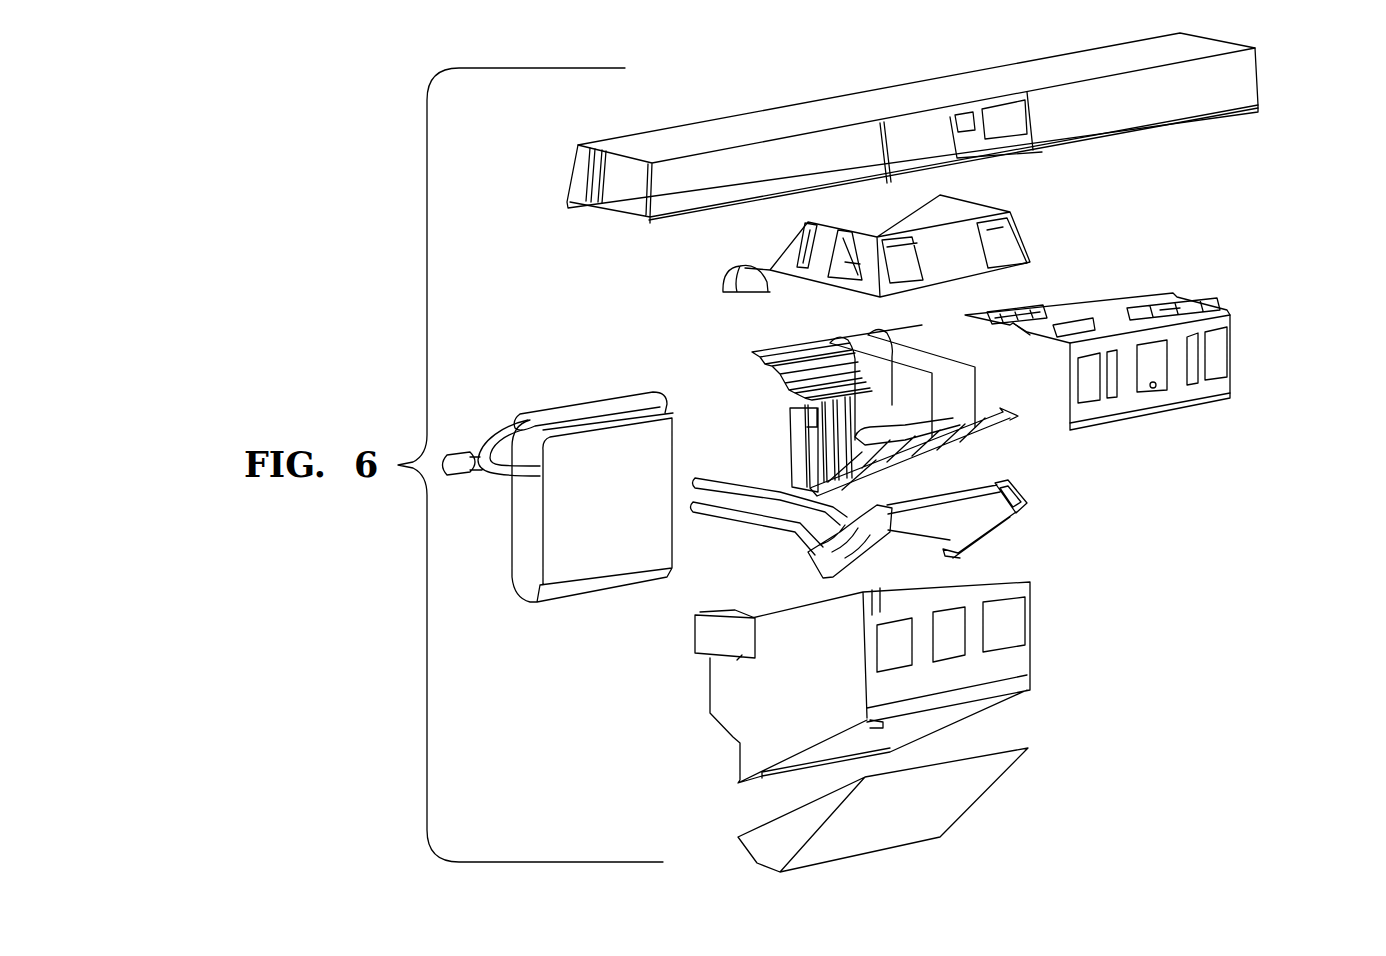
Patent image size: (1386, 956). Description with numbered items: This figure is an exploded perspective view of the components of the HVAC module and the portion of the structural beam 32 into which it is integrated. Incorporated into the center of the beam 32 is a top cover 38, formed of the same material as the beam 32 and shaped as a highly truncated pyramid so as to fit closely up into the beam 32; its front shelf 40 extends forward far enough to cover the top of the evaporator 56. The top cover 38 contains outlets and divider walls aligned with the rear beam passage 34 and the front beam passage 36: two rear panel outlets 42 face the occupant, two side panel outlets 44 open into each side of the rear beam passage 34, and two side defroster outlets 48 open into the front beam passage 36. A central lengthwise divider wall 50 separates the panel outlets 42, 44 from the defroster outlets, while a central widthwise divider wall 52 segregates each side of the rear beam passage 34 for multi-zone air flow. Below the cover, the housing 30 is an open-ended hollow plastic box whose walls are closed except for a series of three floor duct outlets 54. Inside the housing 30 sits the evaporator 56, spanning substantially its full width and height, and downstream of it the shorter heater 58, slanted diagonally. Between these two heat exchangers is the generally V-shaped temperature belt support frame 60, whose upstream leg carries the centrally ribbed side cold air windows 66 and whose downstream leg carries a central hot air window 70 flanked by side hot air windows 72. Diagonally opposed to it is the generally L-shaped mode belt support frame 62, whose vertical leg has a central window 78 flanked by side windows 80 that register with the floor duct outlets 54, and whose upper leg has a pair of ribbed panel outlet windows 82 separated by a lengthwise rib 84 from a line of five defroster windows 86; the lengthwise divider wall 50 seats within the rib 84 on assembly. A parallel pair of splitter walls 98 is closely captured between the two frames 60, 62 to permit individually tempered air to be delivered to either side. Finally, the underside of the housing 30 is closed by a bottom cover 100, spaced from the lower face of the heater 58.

The housing 30 is at (877, 682).
The beam 32 is at (748, 117).
The rear beam passage 34 is at (638, 190).
The front beam passage 36 is at (583, 173).
The top cover 38 is at (872, 219).
The front shelf 40 is at (733, 275).
The rear panel outlets 42 is at (917, 255).
The side panel outlets 44 is at (850, 240).
The side defroster outlets 48 is at (808, 250).
The lengthwise divider wall 50 is at (863, 255).
The widthwise divider wall 52 is at (923, 260).
The floor duct outlets 54 is at (1000, 607).
The evaporator 56 is at (627, 398).
The heater 58 is at (1027, 493).
The temperature belt support frame 60 is at (878, 395).
The mode belt support frame 62 is at (1153, 354).
The side cold air windows 66 is at (815, 428).
The central hot air window 70 is at (898, 463).
The side hot air windows 72 is at (960, 465).
The central window 78 is at (1153, 390).
The side windows 80 is at (1080, 390).
The panel outlet windows 82 is at (1053, 327).
The lengthwise rib 84 is at (1178, 298).
The defroster windows 86 is at (1120, 293).
The splitter walls 98 is at (882, 352).
The bottom cover 100 is at (1005, 770).